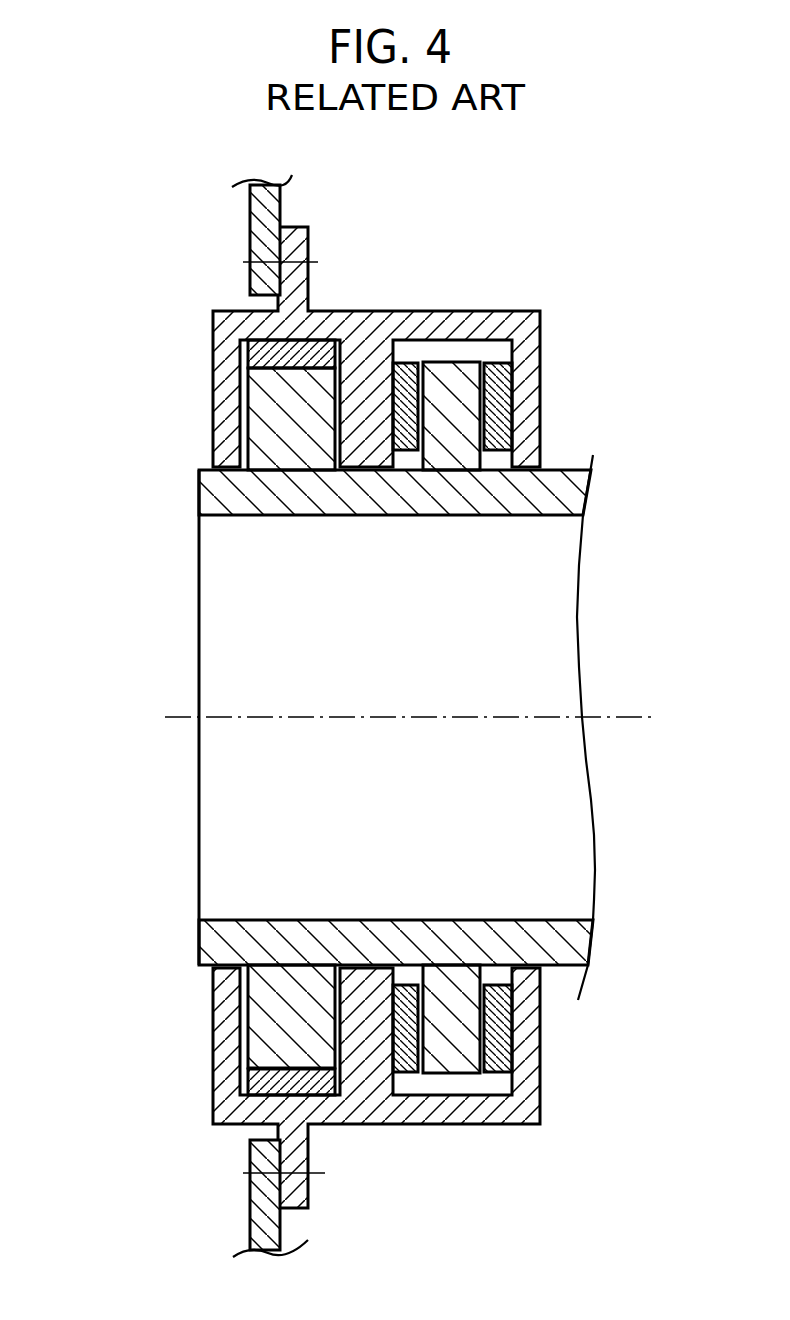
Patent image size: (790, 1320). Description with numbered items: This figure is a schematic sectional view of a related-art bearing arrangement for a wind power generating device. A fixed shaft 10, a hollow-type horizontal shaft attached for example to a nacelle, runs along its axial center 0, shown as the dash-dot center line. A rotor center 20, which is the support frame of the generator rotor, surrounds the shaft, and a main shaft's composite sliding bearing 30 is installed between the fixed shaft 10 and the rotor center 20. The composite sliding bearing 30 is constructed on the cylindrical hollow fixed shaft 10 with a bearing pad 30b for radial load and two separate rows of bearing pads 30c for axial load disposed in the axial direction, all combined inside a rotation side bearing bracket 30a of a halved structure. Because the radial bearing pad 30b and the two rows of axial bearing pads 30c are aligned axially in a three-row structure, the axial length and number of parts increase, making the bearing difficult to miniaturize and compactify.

The axial center 0 is at (421, 718).
The fixed shaft 10 is at (200, 503).
The rotor center 20 is at (258, 236).
The composite sliding bearing 30 is at (215, 371).
The rotation side bearing bracket 30a is at (383, 328).
The bearing pad for radial load 30b is at (323, 310).
The bearing pads for axial load 30c is at (420, 377).